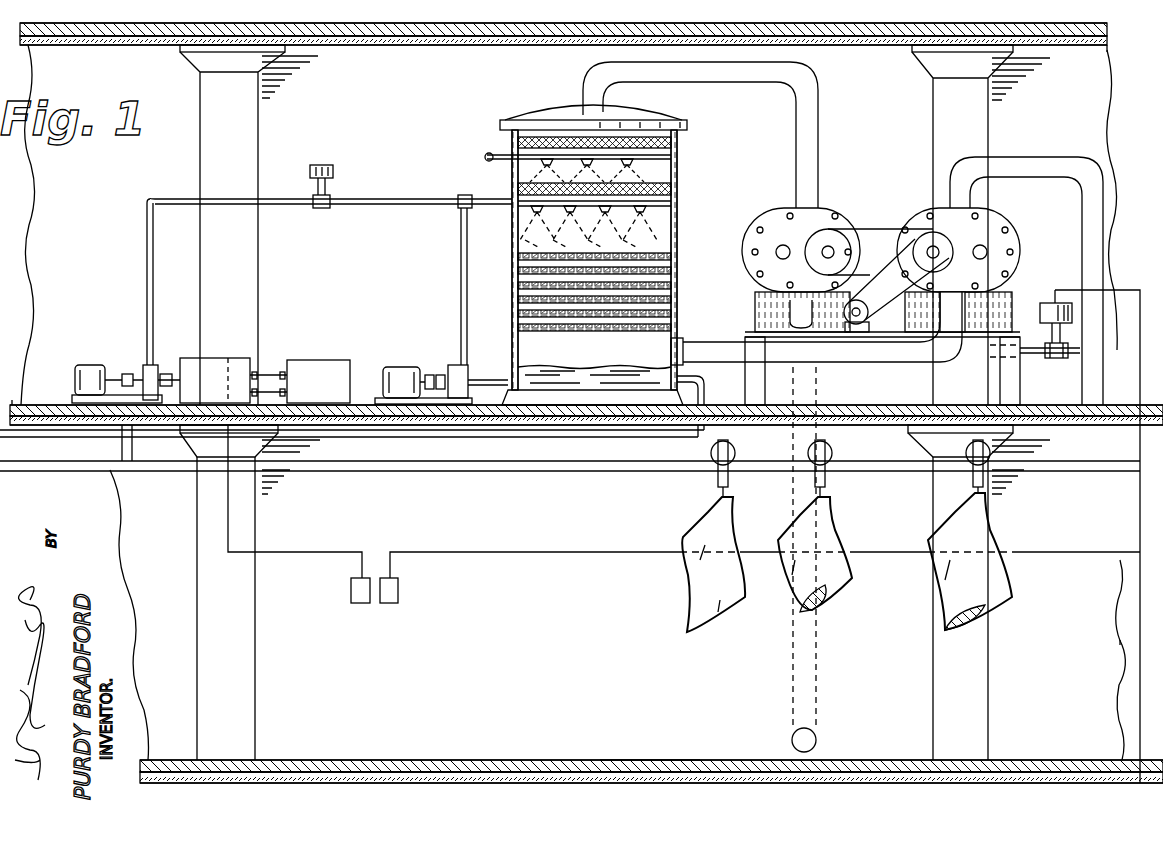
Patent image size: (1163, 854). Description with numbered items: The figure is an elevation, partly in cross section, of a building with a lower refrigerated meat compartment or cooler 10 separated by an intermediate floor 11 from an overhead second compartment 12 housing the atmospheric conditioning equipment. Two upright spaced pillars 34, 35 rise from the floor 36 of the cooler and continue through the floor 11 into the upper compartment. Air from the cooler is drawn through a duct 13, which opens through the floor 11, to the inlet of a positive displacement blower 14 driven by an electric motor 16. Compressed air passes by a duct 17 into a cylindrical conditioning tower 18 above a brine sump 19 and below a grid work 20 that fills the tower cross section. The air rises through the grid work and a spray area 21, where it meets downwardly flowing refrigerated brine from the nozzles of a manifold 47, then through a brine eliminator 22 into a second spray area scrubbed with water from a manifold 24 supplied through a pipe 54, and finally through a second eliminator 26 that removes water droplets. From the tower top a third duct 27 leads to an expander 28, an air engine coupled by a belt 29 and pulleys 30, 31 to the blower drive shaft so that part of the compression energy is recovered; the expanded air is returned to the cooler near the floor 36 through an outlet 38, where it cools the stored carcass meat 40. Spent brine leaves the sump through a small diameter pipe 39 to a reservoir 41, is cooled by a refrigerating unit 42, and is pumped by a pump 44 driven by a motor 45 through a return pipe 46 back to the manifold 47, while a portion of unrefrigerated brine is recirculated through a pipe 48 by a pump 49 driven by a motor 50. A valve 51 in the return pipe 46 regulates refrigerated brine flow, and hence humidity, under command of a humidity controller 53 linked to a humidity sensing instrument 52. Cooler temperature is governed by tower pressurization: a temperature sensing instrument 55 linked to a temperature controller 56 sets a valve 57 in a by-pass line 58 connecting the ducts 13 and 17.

The refrigerated meat compartment 10 is at (1122, 644).
The intermediate floor 11 is at (22, 404).
The second compartment 12 is at (1112, 102).
The duct 13 is at (1105, 210).
The positive displacement blower 14 is at (972, 260).
The electric motor 16 is at (856, 334).
The duct 17 is at (897, 362).
The conditioning tower 18 is at (526, 112).
The brine sump 19 is at (555, 378).
The grid work 20 is at (672, 273).
The spray area 21 is at (662, 232).
The brine eliminator 22 is at (680, 188).
The manifold 24 is at (680, 157).
The second eliminator 26 is at (680, 141).
The third duct 27 is at (820, 98).
The expander 28 is at (805, 251).
The belt 29 is at (870, 230).
The pulley 30 is at (812, 246).
The pulley 31 is at (950, 248).
The pillar 34 is at (258, 660).
The pillar 35 is at (988, 656).
The floor 36 is at (640, 760).
The outlet 38 is at (818, 740).
The small diameter pipe 39 is at (690, 372).
The carcass meat 40 is at (730, 524).
The reservoir 41 is at (242, 368).
The refrigerating unit 42 is at (325, 360).
The pump 44 is at (152, 366).
The motor 45 is at (90, 366).
The return pipe 46 is at (147, 266).
The manifold 47 is at (680, 204).
The pipe 48 is at (461, 296).
The pump 49 is at (456, 367).
The motor 50 is at (397, 367).
The valve 51 is at (322, 209).
The humidity sensing instrument 52 is at (360, 604).
The humidity controller 53 is at (334, 168).
The pipe 54 is at (498, 163).
The temperature sensing instrument 55 is at (399, 592).
The temperature controller 56 is at (1046, 303).
The valve 57 is at (1060, 360).
The by-pass line 58 is at (1030, 356).